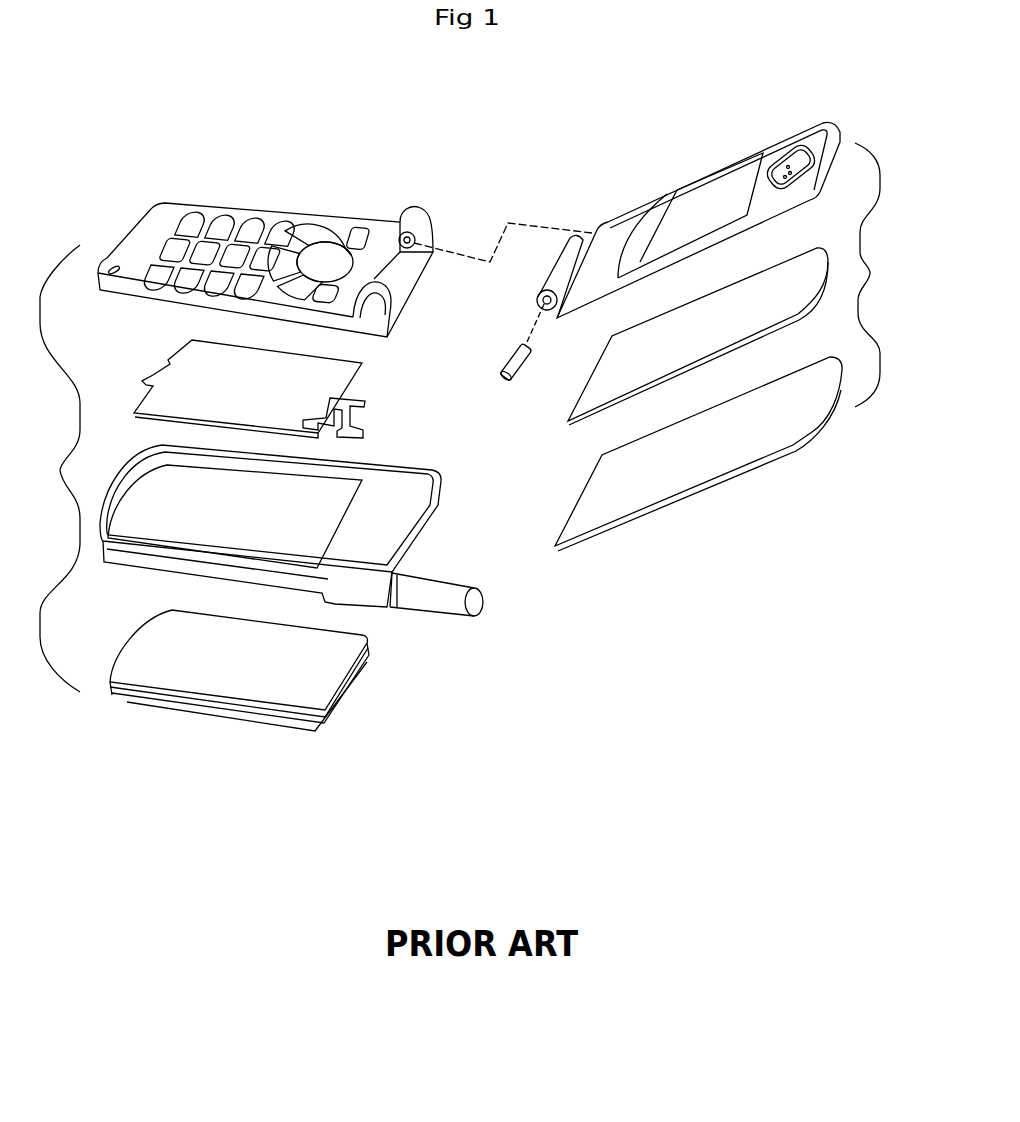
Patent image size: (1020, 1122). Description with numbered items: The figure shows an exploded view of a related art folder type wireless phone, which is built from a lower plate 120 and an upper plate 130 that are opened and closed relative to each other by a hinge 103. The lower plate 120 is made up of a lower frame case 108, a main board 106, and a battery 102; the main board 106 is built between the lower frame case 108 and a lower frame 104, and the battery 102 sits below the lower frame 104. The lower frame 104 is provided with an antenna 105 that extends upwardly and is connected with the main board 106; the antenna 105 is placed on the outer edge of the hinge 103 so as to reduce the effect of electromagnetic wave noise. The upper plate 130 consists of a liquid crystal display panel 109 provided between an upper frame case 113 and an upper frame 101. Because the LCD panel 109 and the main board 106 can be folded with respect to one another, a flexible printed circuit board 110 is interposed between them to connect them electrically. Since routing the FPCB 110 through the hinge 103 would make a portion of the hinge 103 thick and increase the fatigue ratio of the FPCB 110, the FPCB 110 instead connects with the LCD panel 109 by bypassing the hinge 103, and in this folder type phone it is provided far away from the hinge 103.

The upper frame 101 is at (620, 507).
The battery 102 is at (325, 673).
The hinge 103 is at (512, 350).
The lower frame 104 is at (410, 508).
The antenna 105 is at (457, 610).
The main board 106 is at (172, 377).
The lower frame case 108 is at (296, 218).
The liquid crystal display (LCD) panel 109 is at (580, 395).
The flexible printed circuit board (FPCB) 110 is at (362, 404).
The upper frame case 113 is at (618, 217).
The lower plate 120 is at (46, 468).
The upper plate 130 is at (887, 275).